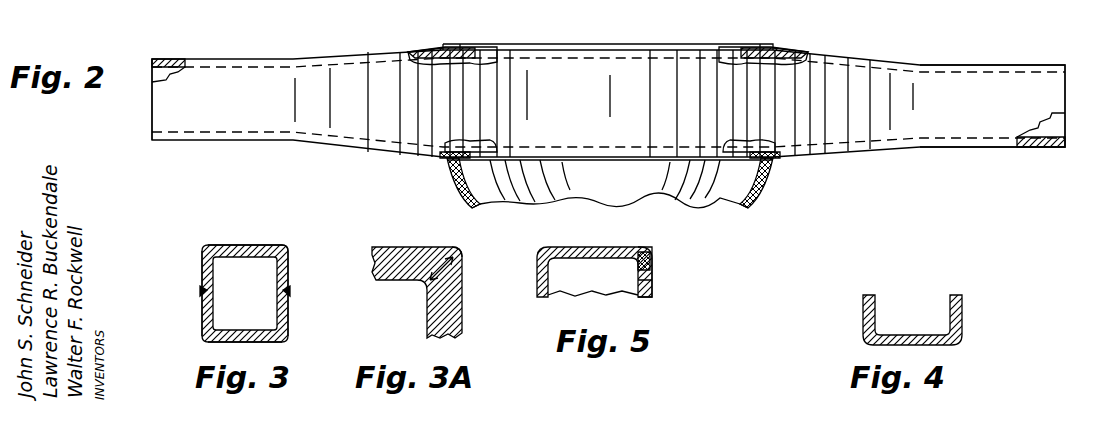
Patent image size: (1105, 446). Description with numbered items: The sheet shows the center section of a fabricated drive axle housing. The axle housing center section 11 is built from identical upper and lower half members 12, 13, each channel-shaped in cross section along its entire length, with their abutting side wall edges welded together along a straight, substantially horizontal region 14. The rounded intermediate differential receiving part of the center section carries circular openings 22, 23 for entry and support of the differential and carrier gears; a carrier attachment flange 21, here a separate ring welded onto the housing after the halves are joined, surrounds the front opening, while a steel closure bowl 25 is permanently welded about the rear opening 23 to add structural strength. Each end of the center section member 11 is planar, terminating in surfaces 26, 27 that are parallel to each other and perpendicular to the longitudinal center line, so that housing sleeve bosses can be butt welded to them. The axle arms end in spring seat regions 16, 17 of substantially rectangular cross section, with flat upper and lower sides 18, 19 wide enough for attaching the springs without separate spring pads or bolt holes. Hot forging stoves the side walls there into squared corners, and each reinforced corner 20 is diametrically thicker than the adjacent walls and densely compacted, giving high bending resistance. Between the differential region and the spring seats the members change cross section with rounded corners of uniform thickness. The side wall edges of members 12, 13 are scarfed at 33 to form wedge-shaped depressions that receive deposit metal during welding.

In FIG. 2, the axle housing center section 11 is at (866, 66).
In FIG. 2, the upper half member 12 is at (878, 140).
In FIG. 3, the upper half member 12 is at (192, 262).
In FIG. 3A, the upper half member 12 is at (462, 325).
In FIG. 5, the upper half member 12 is at (590, 247).
In FIG. 3, the lower half member 13 is at (193, 325).
In FIG. 4, the lower half member 13 is at (952, 352).
In FIG. 3, the horizontal welded region 14 is at (292, 294).
In FIG. 2, the spring seat region 16 is at (965, 56).
In FIG. 2, the spring seat region 17 is at (221, 52).
In FIG. 3, the spring seat region 17 is at (299, 269).
In FIG. 2, the flat upper side 18 is at (240, 76).
In FIG. 3, the flat upper side 18 is at (232, 245).
In FIG. 3, the flat lower side 19 is at (270, 345).
In FIG. 3, the reinforced corner 20 is at (290, 246).
In FIG. 3A, the reinforced corner 20 is at (460, 264).
In FIG. 2, the carrier attachment flange 21 is at (465, 48).
In FIG. 5, the carrier attachment flange 21 is at (652, 270).
In FIG. 2, the circular opening 22 is at (470, 50).
In FIG. 2, the circular opening 23 is at (485, 150).
In FIG. 2, the steel closure bowl 25 is at (757, 175).
In FIG. 2, the end surface 26 is at (150, 86).
In FIG. 2, the end surface 27 is at (1067, 80).
In FIG. 3, the scarfed edge 33 is at (198, 290).